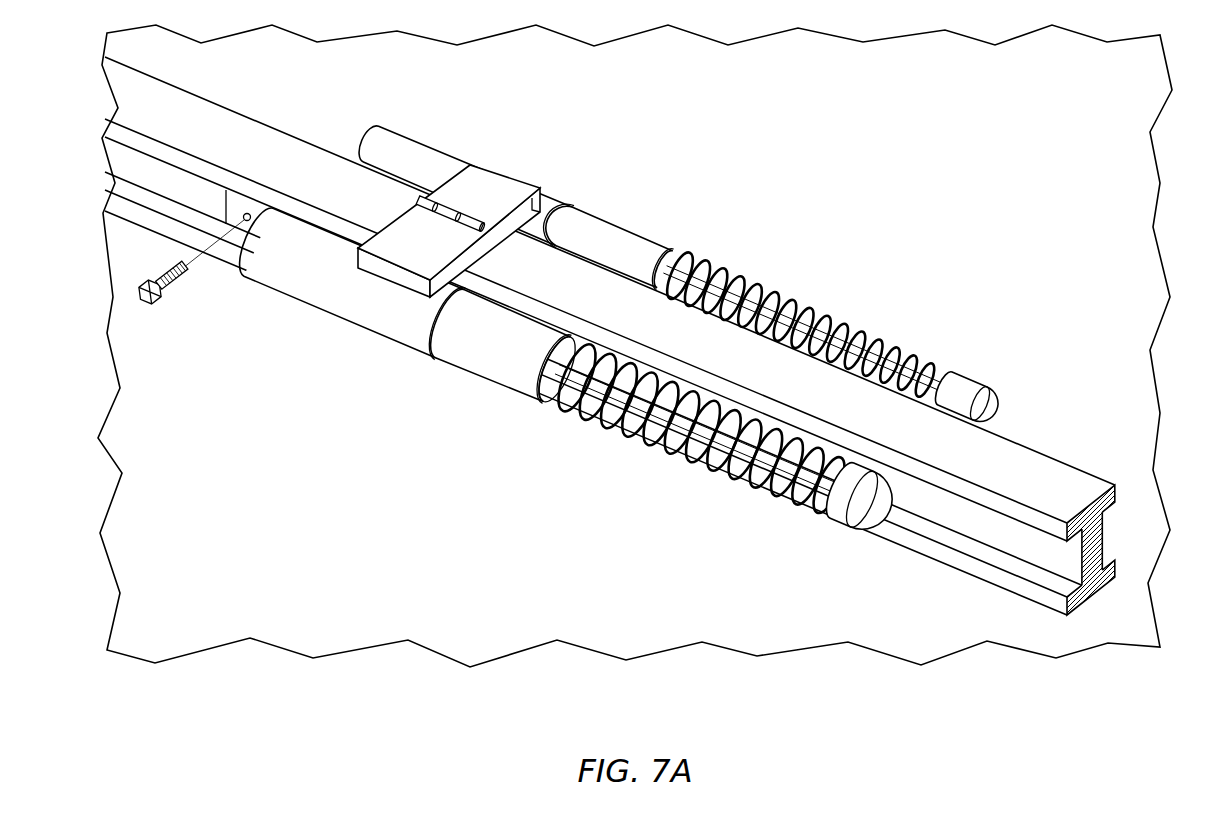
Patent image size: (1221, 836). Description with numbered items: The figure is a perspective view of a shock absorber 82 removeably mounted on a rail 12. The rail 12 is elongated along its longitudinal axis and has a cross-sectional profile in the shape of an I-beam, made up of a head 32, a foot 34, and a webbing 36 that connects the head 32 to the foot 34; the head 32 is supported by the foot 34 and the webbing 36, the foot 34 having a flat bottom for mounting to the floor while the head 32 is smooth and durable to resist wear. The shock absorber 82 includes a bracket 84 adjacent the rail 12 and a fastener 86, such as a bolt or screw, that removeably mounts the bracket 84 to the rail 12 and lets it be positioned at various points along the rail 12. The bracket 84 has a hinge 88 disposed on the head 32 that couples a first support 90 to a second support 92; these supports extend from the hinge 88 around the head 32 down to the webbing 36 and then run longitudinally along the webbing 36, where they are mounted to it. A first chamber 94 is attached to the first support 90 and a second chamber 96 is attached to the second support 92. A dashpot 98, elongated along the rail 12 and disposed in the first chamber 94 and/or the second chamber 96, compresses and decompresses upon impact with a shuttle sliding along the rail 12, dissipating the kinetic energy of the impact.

The rail 12 is at (662, 343).
The head 32 is at (1108, 497).
The foot 34 is at (1120, 578).
The webbing 36 is at (1093, 553).
The shock absorber 82 is at (690, 122).
The bracket 84 is at (455, 233).
The fastener 86 is at (139, 297).
The hinge 88 is at (462, 220).
The first support 90 is at (480, 184).
The second support 92 is at (404, 258).
The first chamber 94 is at (403, 148).
The second chamber 96 is at (296, 287).
The dashpot 98 is at (625, 250).